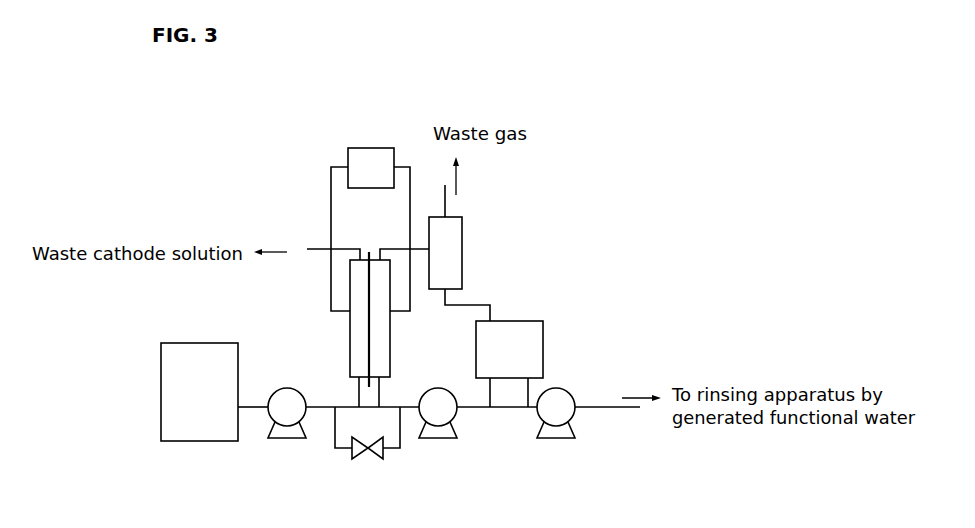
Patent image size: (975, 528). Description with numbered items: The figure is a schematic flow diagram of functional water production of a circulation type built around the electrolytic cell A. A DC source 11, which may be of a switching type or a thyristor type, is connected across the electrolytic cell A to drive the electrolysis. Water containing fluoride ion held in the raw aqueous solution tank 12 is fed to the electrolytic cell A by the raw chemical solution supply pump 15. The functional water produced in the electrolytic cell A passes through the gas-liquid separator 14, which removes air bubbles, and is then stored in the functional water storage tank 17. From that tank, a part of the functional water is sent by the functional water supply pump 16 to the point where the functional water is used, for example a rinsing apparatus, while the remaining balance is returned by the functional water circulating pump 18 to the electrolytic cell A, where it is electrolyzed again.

The DC source 11 is at (371, 158).
The electrolytic cell A is at (378, 329).
The raw aqueous solution tank 12 is at (200, 443).
The gas-liquid separator 14 is at (448, 249).
The raw chemical solution supply pump 15 is at (287, 400).
The functional water supply pump 16 is at (556, 408).
The functional water storage tank 17 is at (517, 321).
The functional water circulating pump 18 is at (438, 404).